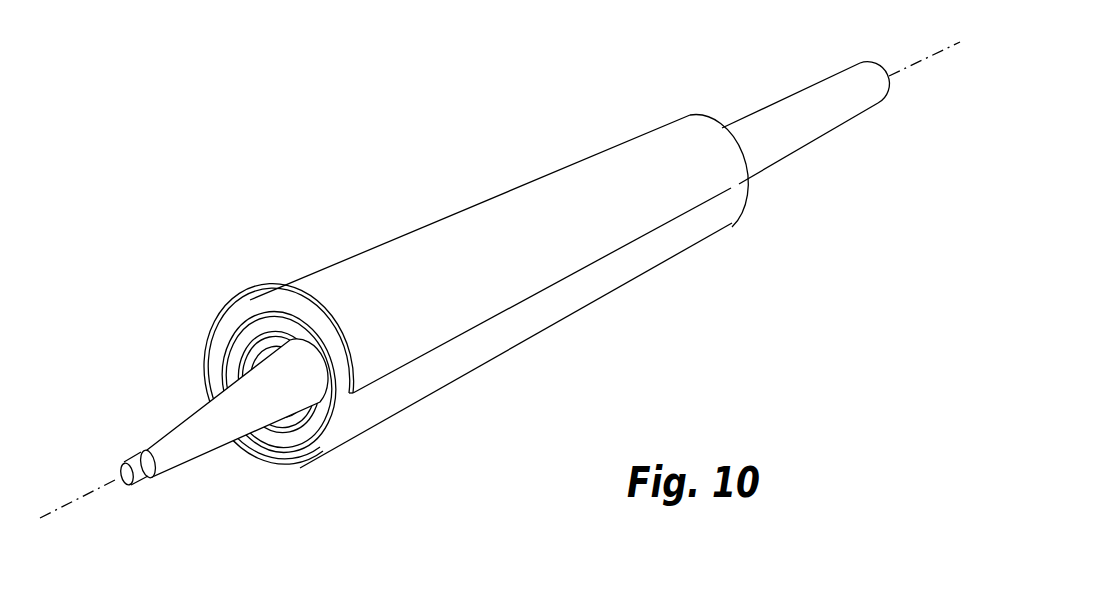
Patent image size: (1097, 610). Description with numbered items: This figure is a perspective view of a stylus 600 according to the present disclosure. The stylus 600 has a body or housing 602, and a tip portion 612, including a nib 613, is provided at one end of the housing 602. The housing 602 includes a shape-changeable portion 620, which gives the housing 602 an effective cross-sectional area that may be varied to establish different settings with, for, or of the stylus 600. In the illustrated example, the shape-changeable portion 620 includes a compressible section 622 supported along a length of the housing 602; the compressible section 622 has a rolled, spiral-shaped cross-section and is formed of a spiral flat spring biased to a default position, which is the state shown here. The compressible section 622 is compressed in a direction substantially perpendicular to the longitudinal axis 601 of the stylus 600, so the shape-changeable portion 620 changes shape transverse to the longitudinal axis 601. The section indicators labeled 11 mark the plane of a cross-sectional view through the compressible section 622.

The stylus 600 is at (133, 69).
The longitudinal axis 601 is at (940, 50).
The housing 602 is at (593, 77).
The shape-changeable portion 620 is at (435, 195).
The compressible section 622 is at (350, 273).
The tip portion 612 is at (175, 405).
The nib 613 is at (135, 462).
The section line 11 is at (626, 203).